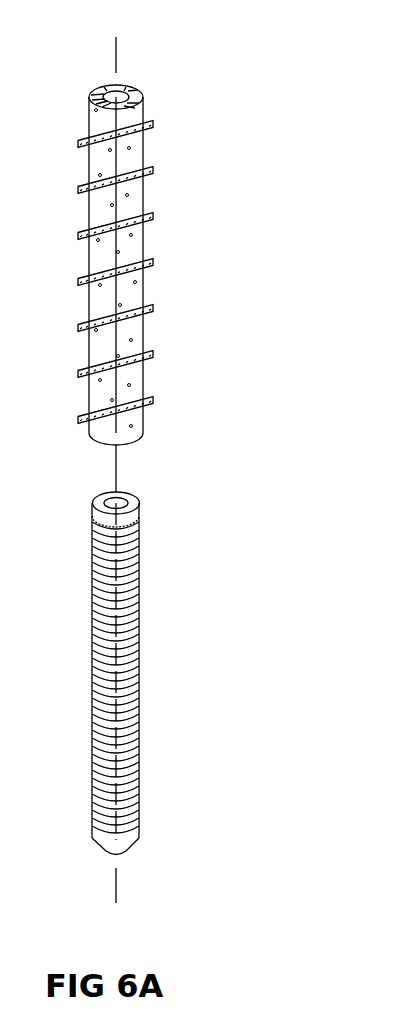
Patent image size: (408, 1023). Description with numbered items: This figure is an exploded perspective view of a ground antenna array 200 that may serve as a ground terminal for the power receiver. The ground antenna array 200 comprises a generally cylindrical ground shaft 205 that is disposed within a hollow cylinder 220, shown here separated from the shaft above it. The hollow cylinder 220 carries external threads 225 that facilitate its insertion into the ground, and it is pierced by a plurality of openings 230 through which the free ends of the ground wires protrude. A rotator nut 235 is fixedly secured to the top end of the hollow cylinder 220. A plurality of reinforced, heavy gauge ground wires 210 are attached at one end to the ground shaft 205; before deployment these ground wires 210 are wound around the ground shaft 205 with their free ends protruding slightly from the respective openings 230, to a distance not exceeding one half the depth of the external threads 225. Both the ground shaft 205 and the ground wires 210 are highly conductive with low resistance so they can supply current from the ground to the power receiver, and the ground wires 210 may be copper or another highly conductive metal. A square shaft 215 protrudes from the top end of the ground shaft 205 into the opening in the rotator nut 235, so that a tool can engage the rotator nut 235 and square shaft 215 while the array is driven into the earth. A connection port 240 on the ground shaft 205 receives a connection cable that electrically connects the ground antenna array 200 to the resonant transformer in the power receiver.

The ground antenna array 200 is at (309, 79).
The ground shaft 205 is at (93, 578).
The ground wires 210 is at (138, 566).
The square shaft 215 is at (127, 497).
The hollow cylinder 220 is at (146, 250).
The external threads 225 is at (84, 190).
The openings 230 is at (132, 338).
The rotator nut 235 is at (132, 86).
The connection port 240 is at (93, 525).